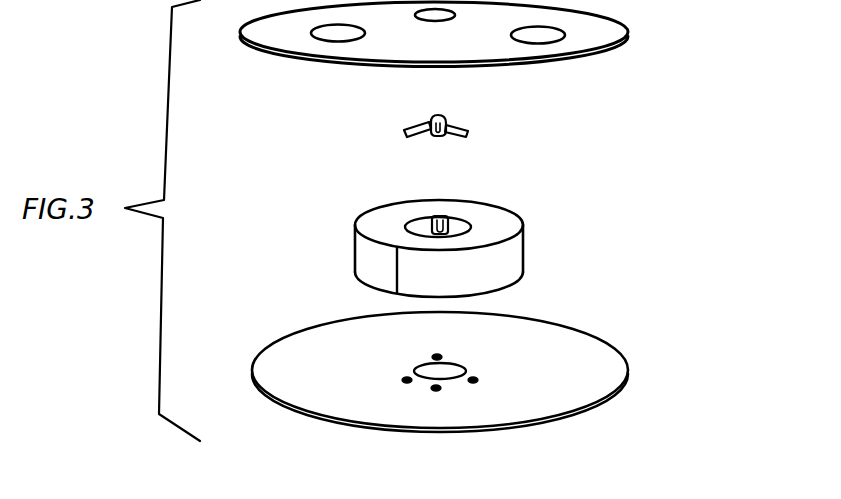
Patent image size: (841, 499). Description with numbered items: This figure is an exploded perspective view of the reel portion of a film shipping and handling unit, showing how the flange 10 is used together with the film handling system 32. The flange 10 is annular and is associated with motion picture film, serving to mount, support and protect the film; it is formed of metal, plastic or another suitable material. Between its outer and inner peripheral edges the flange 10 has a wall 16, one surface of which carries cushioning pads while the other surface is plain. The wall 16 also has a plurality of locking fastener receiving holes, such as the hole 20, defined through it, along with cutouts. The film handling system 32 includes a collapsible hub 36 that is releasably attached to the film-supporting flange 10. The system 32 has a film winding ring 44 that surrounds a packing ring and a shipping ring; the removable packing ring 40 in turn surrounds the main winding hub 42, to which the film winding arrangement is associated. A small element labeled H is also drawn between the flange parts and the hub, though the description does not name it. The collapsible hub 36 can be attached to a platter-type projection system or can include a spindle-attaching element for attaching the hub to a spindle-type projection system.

The flange 10 is at (444, 387).
The wall 16 is at (328, 397).
The locking fastener receiving hole 20 is at (451, 390).
The film handling system 32 is at (700, 166).
The collapsible hub 36 is at (494, 211).
The removable packing ring 40 is at (503, 230).
The main winding hub 42 is at (470, 225).
The film winding ring 44 is at (518, 260).
The hook H is at (401, 130).